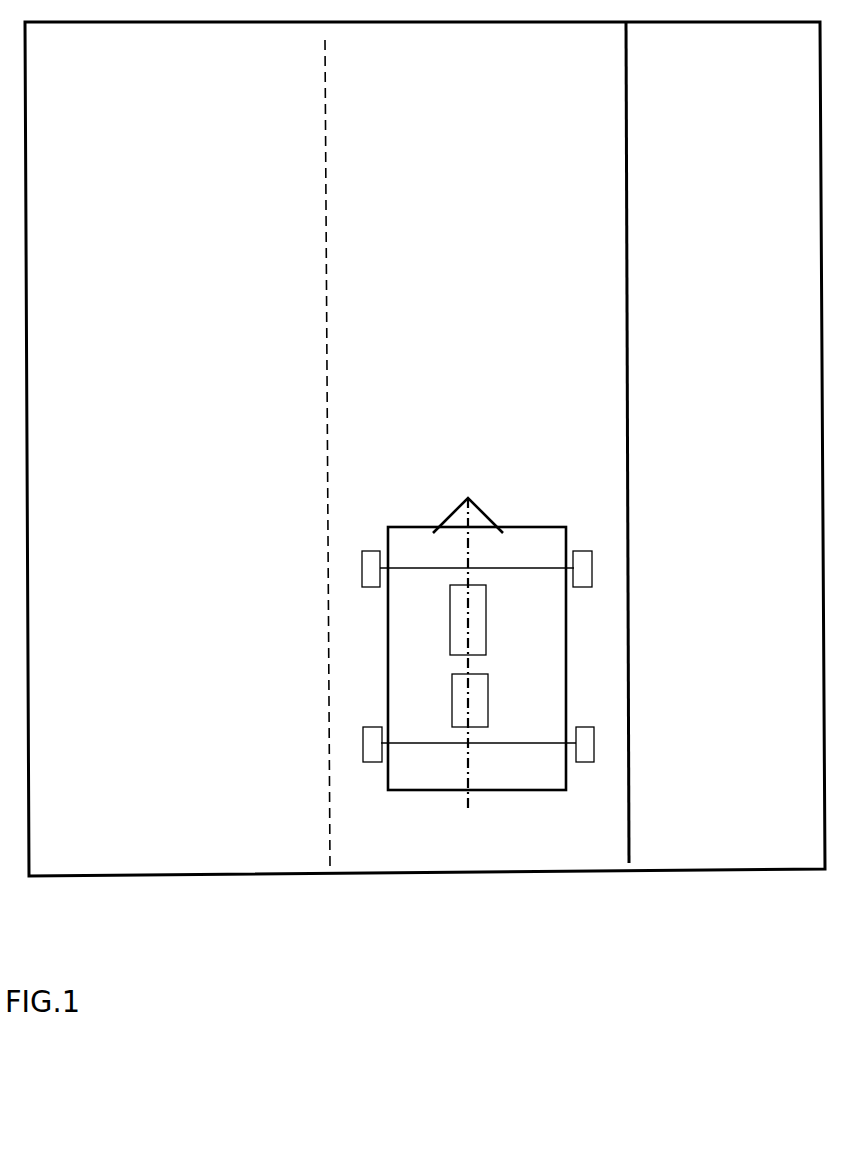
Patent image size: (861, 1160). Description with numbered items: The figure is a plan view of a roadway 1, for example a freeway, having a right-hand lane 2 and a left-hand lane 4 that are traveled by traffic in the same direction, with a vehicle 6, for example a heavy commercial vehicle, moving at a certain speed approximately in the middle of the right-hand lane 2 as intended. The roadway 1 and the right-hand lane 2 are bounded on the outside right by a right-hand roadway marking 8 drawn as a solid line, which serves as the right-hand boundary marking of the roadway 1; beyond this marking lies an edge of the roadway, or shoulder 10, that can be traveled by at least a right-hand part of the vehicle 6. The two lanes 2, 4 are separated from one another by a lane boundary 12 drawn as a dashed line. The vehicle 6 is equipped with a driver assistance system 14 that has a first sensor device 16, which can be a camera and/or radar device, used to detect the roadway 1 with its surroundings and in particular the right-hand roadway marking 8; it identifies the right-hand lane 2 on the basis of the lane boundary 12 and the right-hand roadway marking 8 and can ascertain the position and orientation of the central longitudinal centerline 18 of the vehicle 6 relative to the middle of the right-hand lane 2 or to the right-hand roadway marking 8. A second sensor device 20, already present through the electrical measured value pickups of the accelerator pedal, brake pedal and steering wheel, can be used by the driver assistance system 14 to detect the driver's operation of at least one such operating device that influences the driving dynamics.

The roadway 1 is at (427, 894).
The right-hand lane 2 is at (425, 166).
The left-hand lane 4 is at (132, 159).
The vehicle 6 is at (408, 789).
The right-hand roadway marking 8 is at (652, 349).
The shoulder 10 is at (720, 146).
The lane boundary 12 is at (317, 381).
The driver assistance system 14 is at (437, 622).
The first sensor device 16 is at (434, 493).
The central longitudinal centerline 18 is at (483, 787).
The second sensor device 20 is at (437, 694).